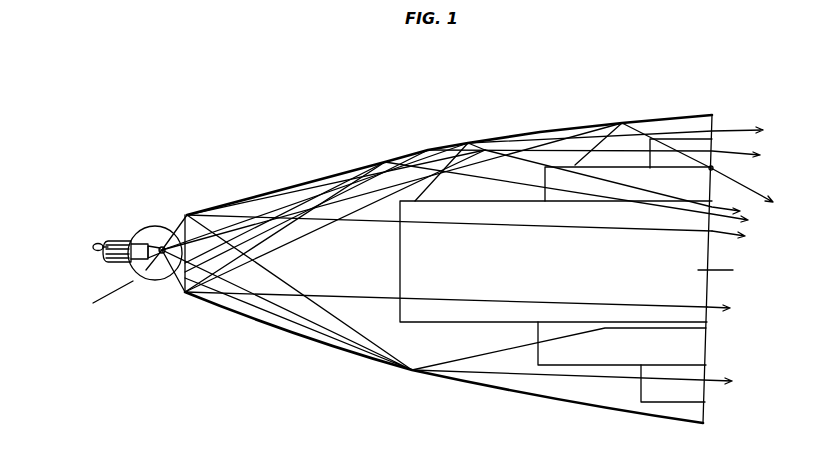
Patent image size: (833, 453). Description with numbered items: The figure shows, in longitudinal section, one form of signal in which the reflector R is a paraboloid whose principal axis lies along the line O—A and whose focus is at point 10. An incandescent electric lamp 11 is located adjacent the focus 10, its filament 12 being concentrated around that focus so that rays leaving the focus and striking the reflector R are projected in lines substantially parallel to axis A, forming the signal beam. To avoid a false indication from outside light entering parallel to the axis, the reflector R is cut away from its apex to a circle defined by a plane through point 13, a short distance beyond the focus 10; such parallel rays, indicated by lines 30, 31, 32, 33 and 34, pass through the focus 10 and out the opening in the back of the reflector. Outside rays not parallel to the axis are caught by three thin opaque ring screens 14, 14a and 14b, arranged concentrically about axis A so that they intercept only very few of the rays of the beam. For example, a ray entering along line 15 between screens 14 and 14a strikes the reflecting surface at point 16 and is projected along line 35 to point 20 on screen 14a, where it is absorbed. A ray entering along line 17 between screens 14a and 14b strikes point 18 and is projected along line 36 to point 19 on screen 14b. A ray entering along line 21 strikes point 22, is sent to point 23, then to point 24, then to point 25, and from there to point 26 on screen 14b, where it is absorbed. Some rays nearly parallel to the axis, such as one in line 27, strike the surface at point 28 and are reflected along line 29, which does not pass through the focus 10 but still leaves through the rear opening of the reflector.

The reflector R is at (328, 175).
The focus 10 is at (161, 247).
The incandescent electric lamp 11 is at (147, 228).
The filament 12 is at (119, 285).
The point 13 is at (189, 238).
The screen 14 is at (712, 139).
The screen 14a is at (713, 168).
The screen 14b is at (449, 222).
The line 15 is at (765, 203).
The point 16 is at (622, 122).
The line 17 is at (752, 236).
The point 18 is at (468, 143).
The point 19 is at (556, 261).
The point 20 is at (576, 166).
The line 21 is at (600, 184).
The point 22 is at (385, 162).
The point 23 is at (185, 293).
The point 24 is at (187, 214).
The point 25 is at (412, 371).
The point 26 is at (607, 328).
The line 27 is at (604, 178).
The point 28 is at (428, 152).
The line 29 is at (258, 245).
The line 30 is at (765, 130).
The line 31 is at (763, 155).
The line 32 is at (731, 270).
The line 33 is at (733, 308).
The line 34 is at (736, 381).
The line 35 is at (606, 137).
The line 36 is at (437, 192).
The axis O— A is at (715, 265).